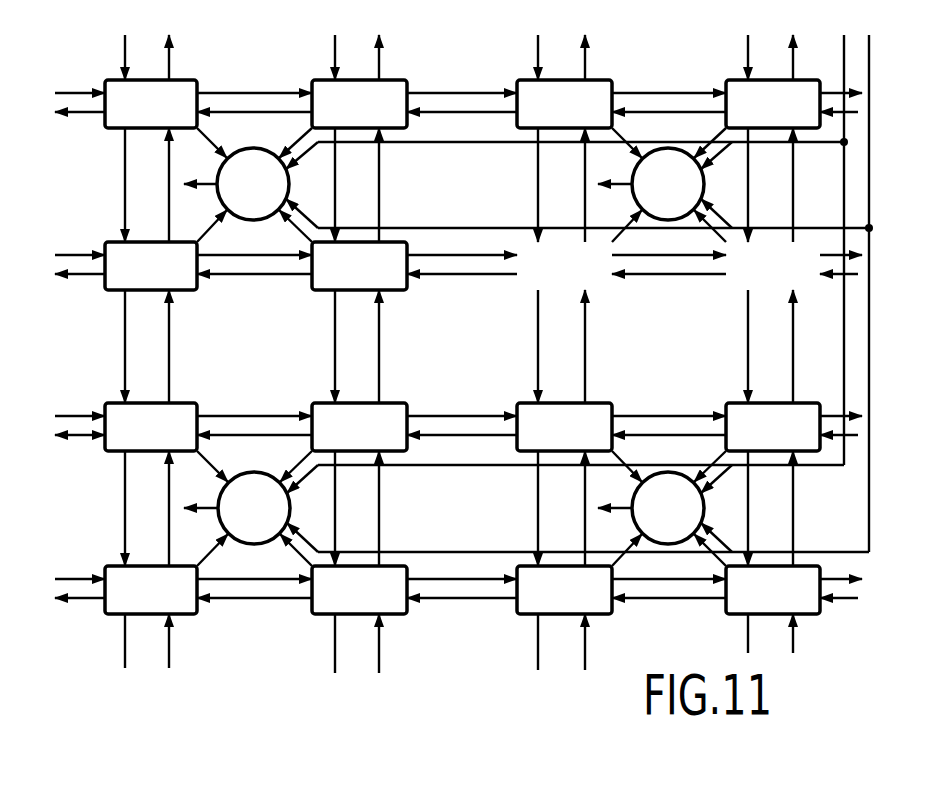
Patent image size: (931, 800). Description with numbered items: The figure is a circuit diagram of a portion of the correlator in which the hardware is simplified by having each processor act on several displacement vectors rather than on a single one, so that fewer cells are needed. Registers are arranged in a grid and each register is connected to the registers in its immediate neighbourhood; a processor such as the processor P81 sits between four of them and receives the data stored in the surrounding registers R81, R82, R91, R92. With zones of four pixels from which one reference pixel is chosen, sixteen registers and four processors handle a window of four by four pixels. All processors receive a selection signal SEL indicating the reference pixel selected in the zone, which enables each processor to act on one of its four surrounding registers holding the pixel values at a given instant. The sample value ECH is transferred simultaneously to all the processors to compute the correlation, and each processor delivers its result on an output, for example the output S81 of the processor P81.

The register R81 is at (151, 104).
The register R82 is at (359, 104).
The register R91 is at (151, 266).
The register R92 is at (359, 266).
The processor P81 is at (253, 184).
The output S81 is at (194, 164).
The selection signal SEL is at (840, 465).
The sample value ECH is at (869, 527).